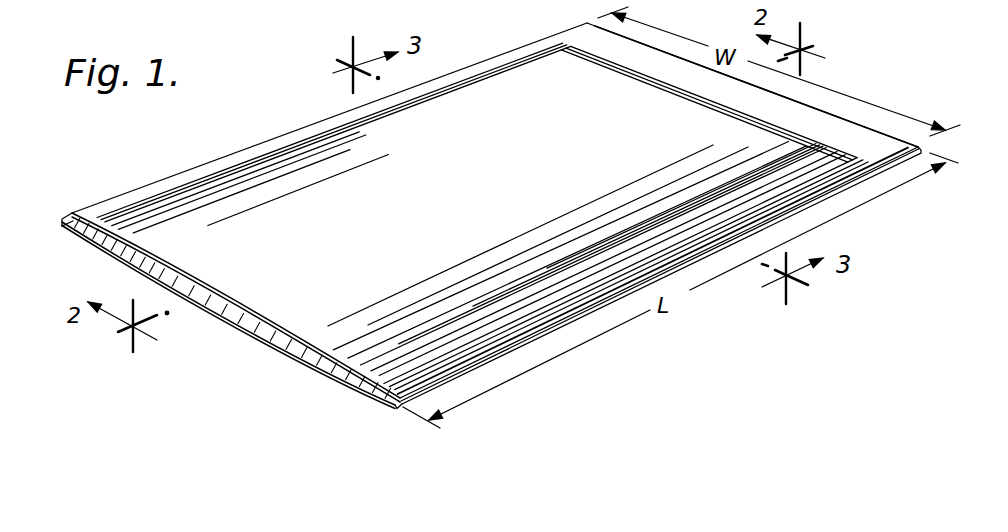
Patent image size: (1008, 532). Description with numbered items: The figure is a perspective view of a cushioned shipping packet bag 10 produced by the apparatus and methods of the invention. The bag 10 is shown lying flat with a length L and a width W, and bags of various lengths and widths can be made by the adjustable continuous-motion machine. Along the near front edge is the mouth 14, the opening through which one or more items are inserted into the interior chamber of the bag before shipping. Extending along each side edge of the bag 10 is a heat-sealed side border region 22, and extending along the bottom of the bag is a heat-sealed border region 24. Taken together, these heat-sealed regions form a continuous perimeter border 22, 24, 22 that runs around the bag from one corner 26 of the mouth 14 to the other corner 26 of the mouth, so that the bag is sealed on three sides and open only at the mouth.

The cushioned shipping packet bag 10 is at (629, 354).
The mouth 14 is at (272, 330).
The heat-sealed side border region 22 is at (181, 178).
The heat-sealed border region 24 is at (832, 122).
The corner 26 is at (63, 226).